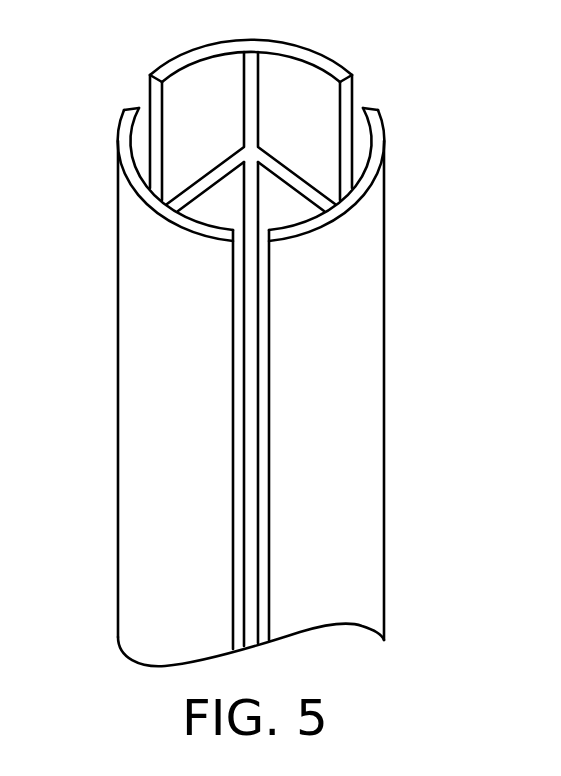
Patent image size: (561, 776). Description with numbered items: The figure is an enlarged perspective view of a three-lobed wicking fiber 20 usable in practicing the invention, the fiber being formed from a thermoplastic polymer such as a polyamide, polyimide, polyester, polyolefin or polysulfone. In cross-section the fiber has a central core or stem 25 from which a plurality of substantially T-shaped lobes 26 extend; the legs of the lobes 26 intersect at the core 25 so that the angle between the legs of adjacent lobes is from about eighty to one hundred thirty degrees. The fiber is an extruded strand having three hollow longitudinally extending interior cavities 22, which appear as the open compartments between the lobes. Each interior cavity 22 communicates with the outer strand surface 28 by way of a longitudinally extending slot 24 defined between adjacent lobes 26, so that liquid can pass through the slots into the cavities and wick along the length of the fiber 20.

The tubular insert assembly 20 is at (62, 428).
The hollow longitudinally extending interior cavity 22 is at (212, 75).
The longitudinally extending slot 24 is at (138, 95).
The central core or stem 25 is at (252, 328).
The T-shaped lobe 26 is at (362, 244).
The outer strand surface 28 is at (145, 485).